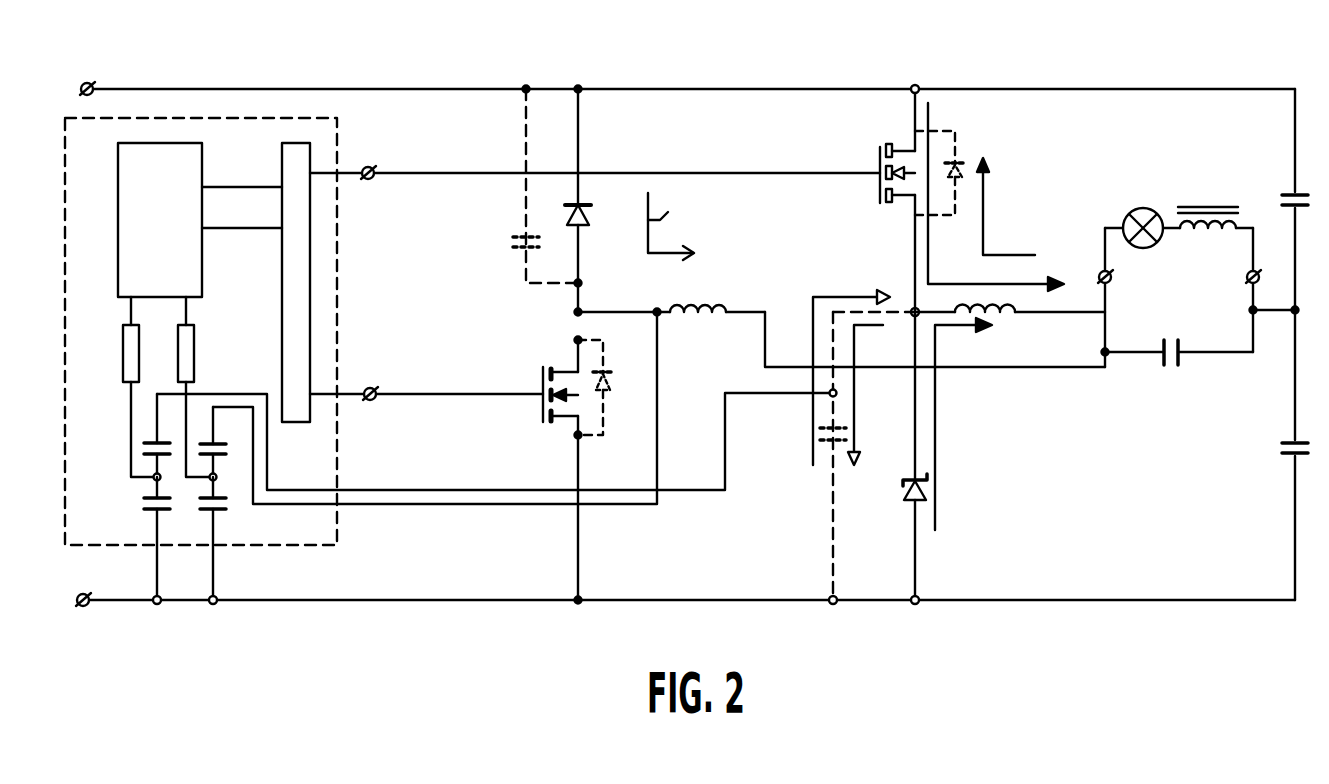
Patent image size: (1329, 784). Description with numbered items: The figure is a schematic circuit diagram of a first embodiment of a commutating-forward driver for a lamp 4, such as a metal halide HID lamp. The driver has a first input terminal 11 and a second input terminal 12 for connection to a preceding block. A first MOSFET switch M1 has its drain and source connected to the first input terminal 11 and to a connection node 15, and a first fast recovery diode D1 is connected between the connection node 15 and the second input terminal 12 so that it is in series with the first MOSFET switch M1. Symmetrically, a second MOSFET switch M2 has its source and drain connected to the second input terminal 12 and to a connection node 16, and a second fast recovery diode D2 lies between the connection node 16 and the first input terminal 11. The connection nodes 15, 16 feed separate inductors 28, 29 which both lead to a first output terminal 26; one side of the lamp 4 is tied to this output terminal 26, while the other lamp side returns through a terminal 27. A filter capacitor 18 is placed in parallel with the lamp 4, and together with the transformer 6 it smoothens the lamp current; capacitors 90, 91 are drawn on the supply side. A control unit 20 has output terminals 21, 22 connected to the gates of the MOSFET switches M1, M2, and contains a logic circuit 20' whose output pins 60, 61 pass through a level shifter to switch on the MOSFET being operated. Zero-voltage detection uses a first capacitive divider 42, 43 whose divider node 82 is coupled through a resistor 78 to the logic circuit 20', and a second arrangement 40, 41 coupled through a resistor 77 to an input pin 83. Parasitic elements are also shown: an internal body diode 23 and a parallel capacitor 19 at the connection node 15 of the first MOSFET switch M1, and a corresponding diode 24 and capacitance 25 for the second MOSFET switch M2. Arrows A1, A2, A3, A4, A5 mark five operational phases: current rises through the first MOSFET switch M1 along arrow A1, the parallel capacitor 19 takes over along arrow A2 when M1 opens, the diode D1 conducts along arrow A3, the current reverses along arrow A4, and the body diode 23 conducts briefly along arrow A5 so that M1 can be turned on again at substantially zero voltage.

The first input terminal 11 is at (92, 80).
The second input terminal 12 is at (85, 608).
The control unit 20 is at (201, 292).
The logic circuit 20' is at (141, 220).
The output terminal of control unit 21 is at (369, 166).
The output terminal of control unit 22 is at (372, 401).
The output pin of the logic circuit 60 is at (247, 187).
The output pin of the driver 61 is at (246, 228).
The input pin of the logic circuit 83 is at (131, 312).
The divider node 82 is at (186, 312).
The resistor 78 is at (123, 362).
The second resistor 77 is at (194, 362).
The capacitor of first capacitive divider 42 is at (144, 449).
The capacitor of first capacitive divider 43 is at (144, 501).
The capacitor of second arrangement 40 is at (219, 444).
The capacitor of second arrangement 41 is at (219, 498).
The parasitic capacitance 25 is at (513, 237).
The second fast recovery diode D2 is at (592, 211).
The parasitic diode of M2 24 is at (608, 390).
The second MOSFET switch M2 is at (541, 381).
The connection node 16 is at (578, 312).
The inductor 29 is at (722, 302).
The connection node 15 is at (913, 308).
The first MOSFET switch M1 is at (878, 159).
The internal body diode of MOSFET M1 23 is at (968, 178).
The arrow indicating first operational phase A1 is at (681, 226).
The arrow indicating second operational phase A2 is at (848, 296).
The arrow indicating third operational phase A3 is at (963, 424).
The arrow indicating fourth operational phase A4 is at (856, 413).
The arrow indicating fifth operational phase A5 is at (1008, 254).
The parallel capacitor 19 is at (829, 446).
The first fast recovery diode D1 is at (903, 489).
The inductor 28 is at (1000, 320).
The lamp 4 is at (1147, 208).
The transformer 6 is at (1191, 238).
The first output terminal 26 is at (1112, 278).
The lamp terminal 27 is at (1248, 273).
The filter capacitor 18 is at (1178, 367).
The capacitor 90 is at (1302, 192).
The capacitor 91 is at (1302, 440).